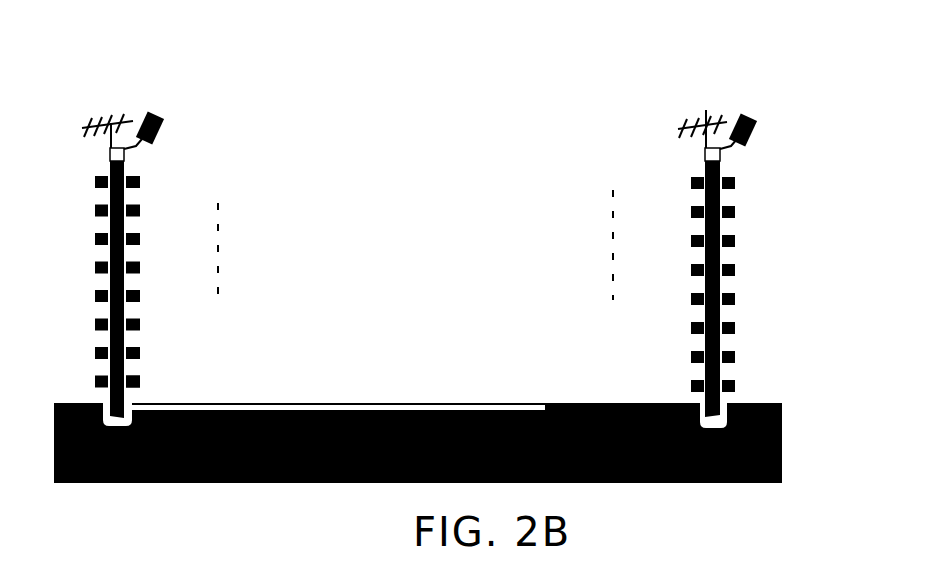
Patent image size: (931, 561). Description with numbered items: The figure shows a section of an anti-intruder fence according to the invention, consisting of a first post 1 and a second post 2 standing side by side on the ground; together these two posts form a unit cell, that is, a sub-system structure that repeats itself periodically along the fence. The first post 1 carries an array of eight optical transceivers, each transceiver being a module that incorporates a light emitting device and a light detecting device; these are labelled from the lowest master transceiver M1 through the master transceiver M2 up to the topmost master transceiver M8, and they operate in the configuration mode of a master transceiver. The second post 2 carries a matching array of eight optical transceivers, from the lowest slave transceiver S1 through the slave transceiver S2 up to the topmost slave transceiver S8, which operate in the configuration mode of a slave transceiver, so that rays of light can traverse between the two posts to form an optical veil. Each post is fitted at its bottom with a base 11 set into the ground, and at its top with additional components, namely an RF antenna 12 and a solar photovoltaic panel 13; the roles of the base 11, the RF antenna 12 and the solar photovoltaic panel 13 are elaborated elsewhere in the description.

The first post 1 is at (110, 283).
The second post 2 is at (717, 287).
The base 11 is at (96, 407).
The RF antenna 12 is at (92, 110).
The solar photovoltaic panel 13 is at (160, 112).
The master optical transceiver M8 is at (137, 184).
The master optical transceiver M2 is at (140, 357).
The master optical transceiver M1 is at (140, 385).
The slave optical transceiver S8 is at (695, 185).
The slave optical transceiver S2 is at (695, 355).
The slave optical transceiver S1 is at (695, 383).